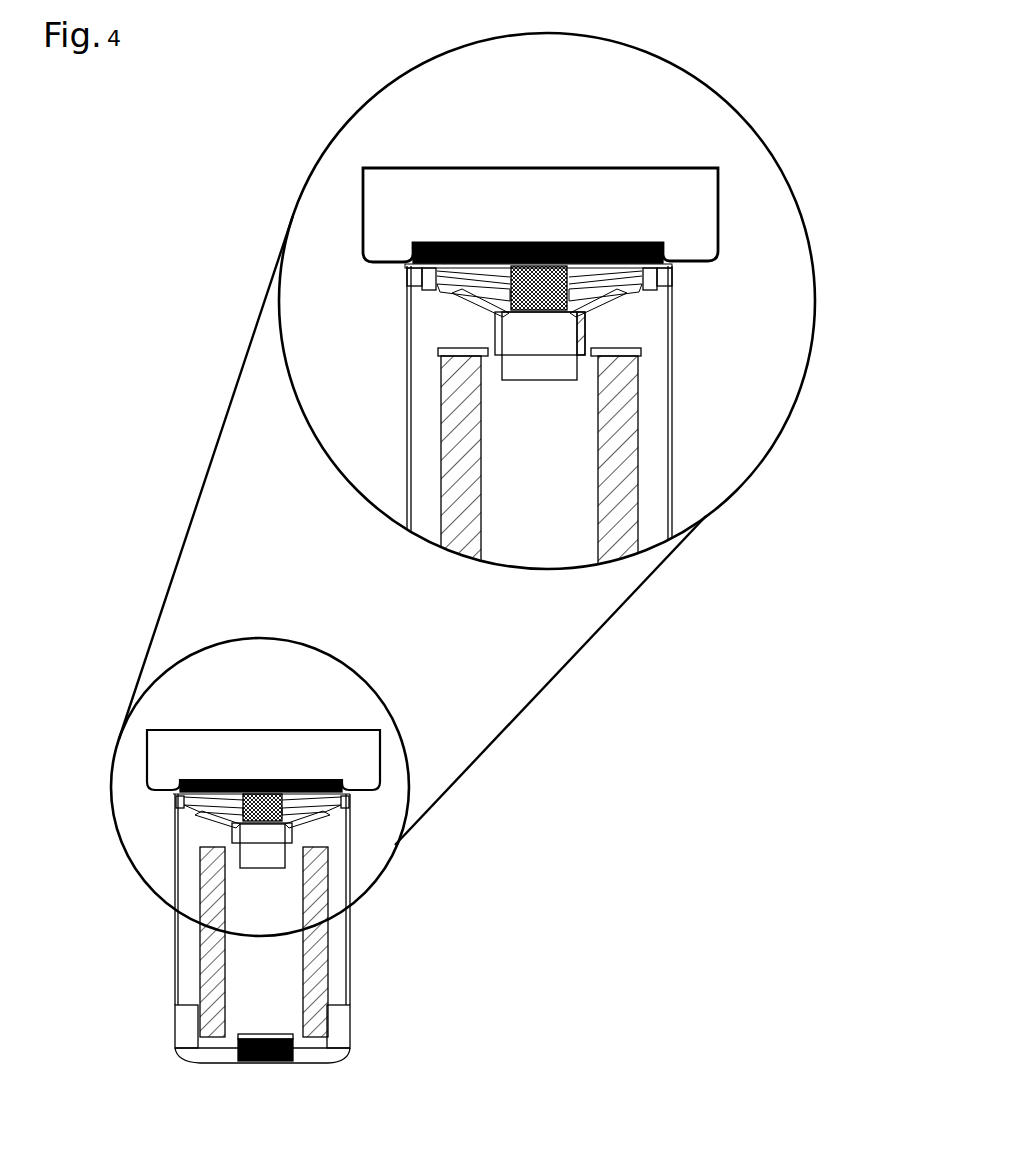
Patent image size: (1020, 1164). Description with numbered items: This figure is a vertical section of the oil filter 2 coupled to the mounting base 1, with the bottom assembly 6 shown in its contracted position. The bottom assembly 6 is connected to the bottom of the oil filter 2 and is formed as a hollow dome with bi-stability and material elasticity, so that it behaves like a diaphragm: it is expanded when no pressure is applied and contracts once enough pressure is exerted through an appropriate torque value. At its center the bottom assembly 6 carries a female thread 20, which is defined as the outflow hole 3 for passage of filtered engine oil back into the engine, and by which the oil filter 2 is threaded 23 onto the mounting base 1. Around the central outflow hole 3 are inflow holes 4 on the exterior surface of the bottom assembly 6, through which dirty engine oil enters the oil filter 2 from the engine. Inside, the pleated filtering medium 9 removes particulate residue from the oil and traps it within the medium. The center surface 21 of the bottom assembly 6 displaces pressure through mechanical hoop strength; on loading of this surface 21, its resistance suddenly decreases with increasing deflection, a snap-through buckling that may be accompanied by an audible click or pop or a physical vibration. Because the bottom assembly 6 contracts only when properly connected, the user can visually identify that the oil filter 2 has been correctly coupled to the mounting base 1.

The mounting base 1 is at (718, 222).
The oil filter 2 is at (362, 958).
The outflow hole 3 is at (527, 365).
The inflow hole 4 is at (462, 292).
The bottom assembly 6 is at (405, 272).
The pleated filtering medium 9 is at (630, 428).
The female thread 20 is at (493, 248).
The center surface 21 is at (640, 250).
The threaded connection 23 is at (537, 252).